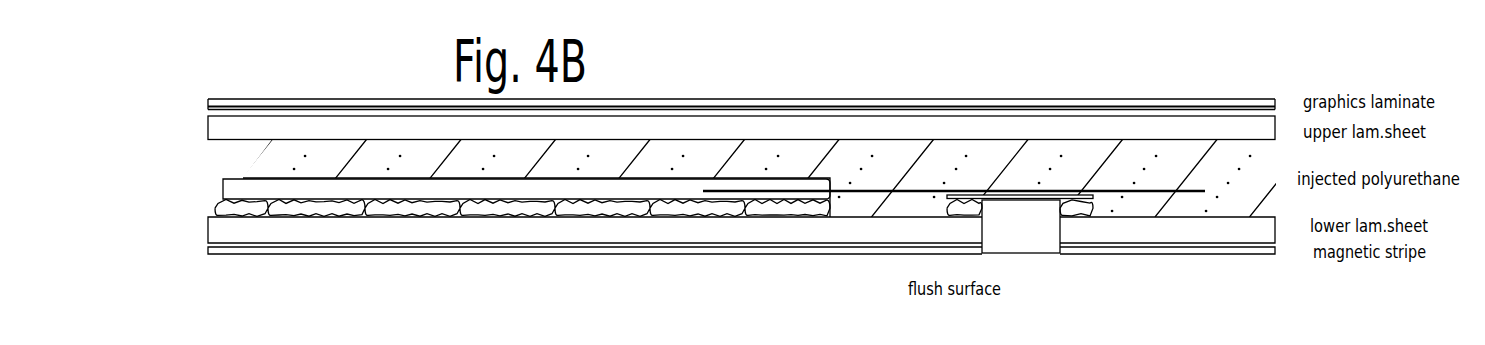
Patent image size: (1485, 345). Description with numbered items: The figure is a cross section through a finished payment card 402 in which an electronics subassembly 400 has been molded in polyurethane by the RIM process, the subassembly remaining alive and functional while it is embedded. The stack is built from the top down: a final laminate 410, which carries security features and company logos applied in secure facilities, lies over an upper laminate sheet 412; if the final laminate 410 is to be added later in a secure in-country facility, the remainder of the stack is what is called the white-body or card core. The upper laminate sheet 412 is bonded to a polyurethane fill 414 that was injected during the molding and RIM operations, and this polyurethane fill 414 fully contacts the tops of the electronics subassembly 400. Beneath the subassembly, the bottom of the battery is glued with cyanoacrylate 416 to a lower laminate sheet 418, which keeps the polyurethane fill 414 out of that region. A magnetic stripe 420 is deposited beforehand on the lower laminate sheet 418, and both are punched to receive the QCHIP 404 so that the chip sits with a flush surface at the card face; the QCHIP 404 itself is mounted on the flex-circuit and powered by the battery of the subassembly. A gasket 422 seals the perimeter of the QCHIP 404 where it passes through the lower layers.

The electronics subassembly 400 is at (232, 190).
The payment card 402 is at (1190, 76).
The QCHIP 404 is at (1050, 248).
The final laminate 410 is at (243, 99).
The upper laminate sheet 412 is at (208, 128).
The polyurethane fill 414 is at (238, 155).
The cyanoacrylate 416 is at (208, 210).
The lower laminate sheet 418 is at (208, 228).
The magnetic stripe 420 is at (252, 255).
The gasket 422 is at (1090, 207).